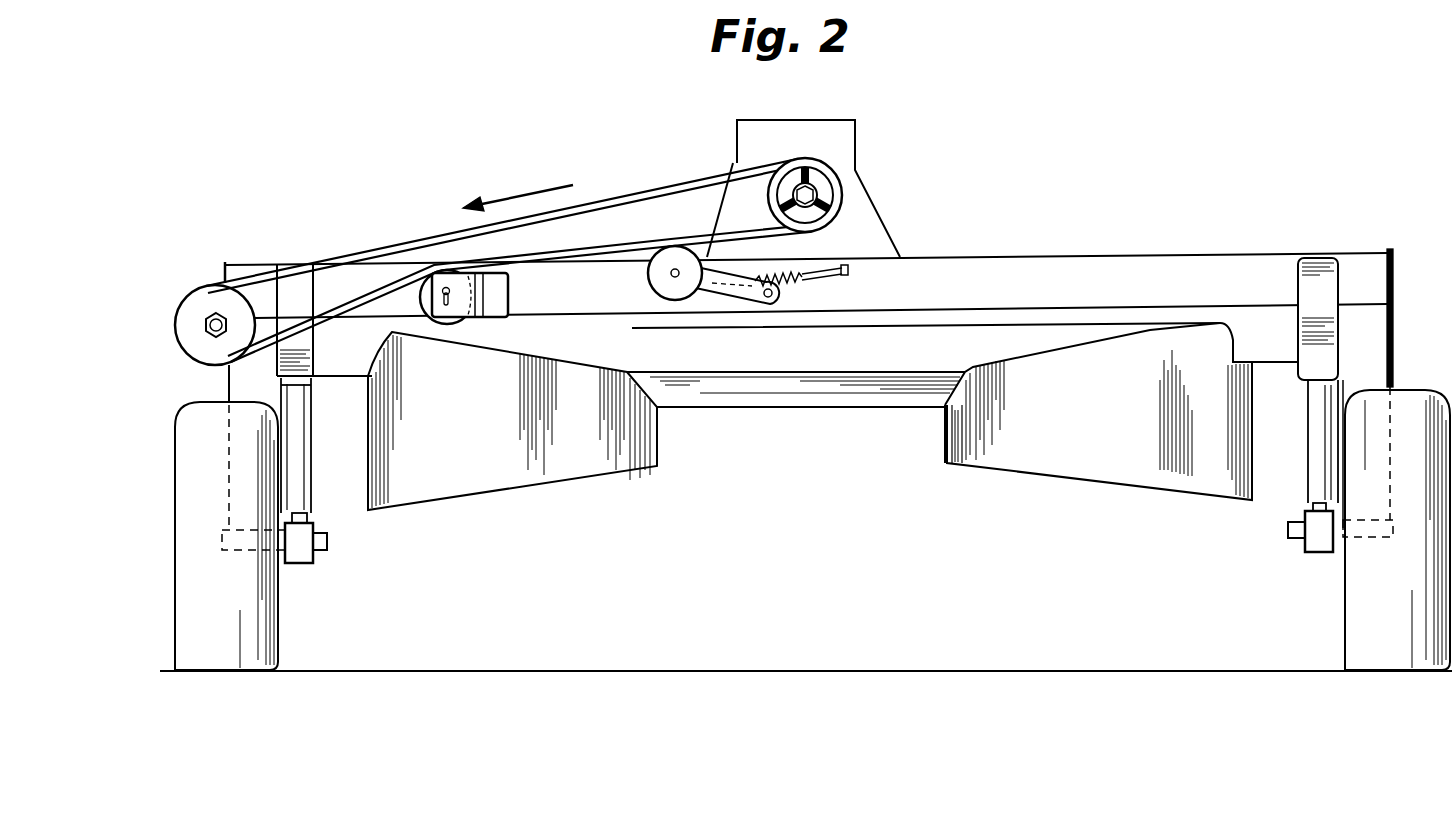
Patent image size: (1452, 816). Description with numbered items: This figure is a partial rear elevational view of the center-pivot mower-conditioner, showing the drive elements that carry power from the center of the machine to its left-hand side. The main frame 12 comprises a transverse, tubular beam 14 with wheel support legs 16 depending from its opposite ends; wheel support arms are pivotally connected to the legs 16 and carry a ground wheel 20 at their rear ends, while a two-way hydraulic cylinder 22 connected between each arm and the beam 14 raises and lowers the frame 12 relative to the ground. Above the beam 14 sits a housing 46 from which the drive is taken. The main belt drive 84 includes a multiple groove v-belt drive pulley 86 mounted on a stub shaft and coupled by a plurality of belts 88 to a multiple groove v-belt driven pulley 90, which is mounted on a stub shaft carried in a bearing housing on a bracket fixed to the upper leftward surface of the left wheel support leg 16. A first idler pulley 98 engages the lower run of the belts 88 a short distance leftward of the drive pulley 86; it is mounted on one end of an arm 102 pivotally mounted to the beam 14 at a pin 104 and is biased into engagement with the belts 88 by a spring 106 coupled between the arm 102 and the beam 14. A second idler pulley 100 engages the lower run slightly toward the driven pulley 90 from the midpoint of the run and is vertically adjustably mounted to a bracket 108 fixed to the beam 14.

The main frame 12 is at (1116, 240).
The transverse tubular beam 14 is at (1241, 253).
The wheel support leg 16 is at (228, 392).
The ground wheel 20 is at (280, 597).
The two-way hydraulic cylinder 22 is at (312, 418).
The motor housing 46 is at (737, 142).
The main belt drive 84 is at (406, 212).
The multiple groove v-belt drive pulley 86 is at (842, 210).
The belts 88 is at (655, 186).
The multiple groove v-belt driven pulley 90 is at (207, 283).
The first idler pulley 98 is at (648, 283).
The second idler pulley 100 is at (424, 322).
The arm 102 is at (712, 308).
The pin 104 is at (768, 306).
The spring 106 is at (786, 268).
The bracket 108 is at (510, 284).